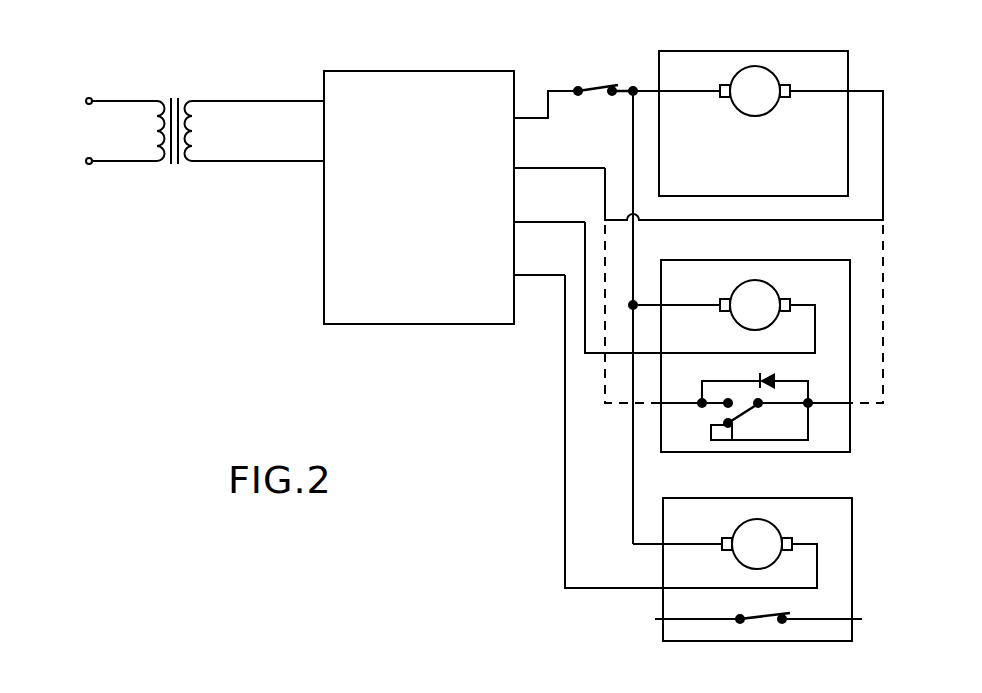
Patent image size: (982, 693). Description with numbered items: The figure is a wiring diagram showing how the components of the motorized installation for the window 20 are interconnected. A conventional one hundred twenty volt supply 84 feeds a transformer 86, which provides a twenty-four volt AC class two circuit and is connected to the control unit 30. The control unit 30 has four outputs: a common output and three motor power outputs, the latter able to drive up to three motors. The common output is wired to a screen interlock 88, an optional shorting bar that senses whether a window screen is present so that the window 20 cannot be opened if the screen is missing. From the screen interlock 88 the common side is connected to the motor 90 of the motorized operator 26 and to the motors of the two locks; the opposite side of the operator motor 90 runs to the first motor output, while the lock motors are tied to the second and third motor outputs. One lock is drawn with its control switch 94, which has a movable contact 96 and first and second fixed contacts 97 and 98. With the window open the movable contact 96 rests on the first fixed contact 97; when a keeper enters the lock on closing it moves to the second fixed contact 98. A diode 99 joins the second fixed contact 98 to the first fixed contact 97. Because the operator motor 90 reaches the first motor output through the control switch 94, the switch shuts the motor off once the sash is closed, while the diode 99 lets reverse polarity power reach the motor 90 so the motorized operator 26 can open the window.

The window 20 is at (438, 349).
The motorized operator 26 is at (744, 113).
The control unit 30 is at (458, 70).
The 120 volt supply 84 is at (105, 176).
The transformer 86 is at (179, 81).
The screen interlock 88 is at (604, 71).
The operator motor 90 is at (770, 68).
The control switch 94 is at (784, 425).
The movable contact 96 is at (745, 410).
The first fixed contact 97 is at (723, 408).
The second fixed contact 98 is at (727, 427).
The diode 99 is at (786, 376).